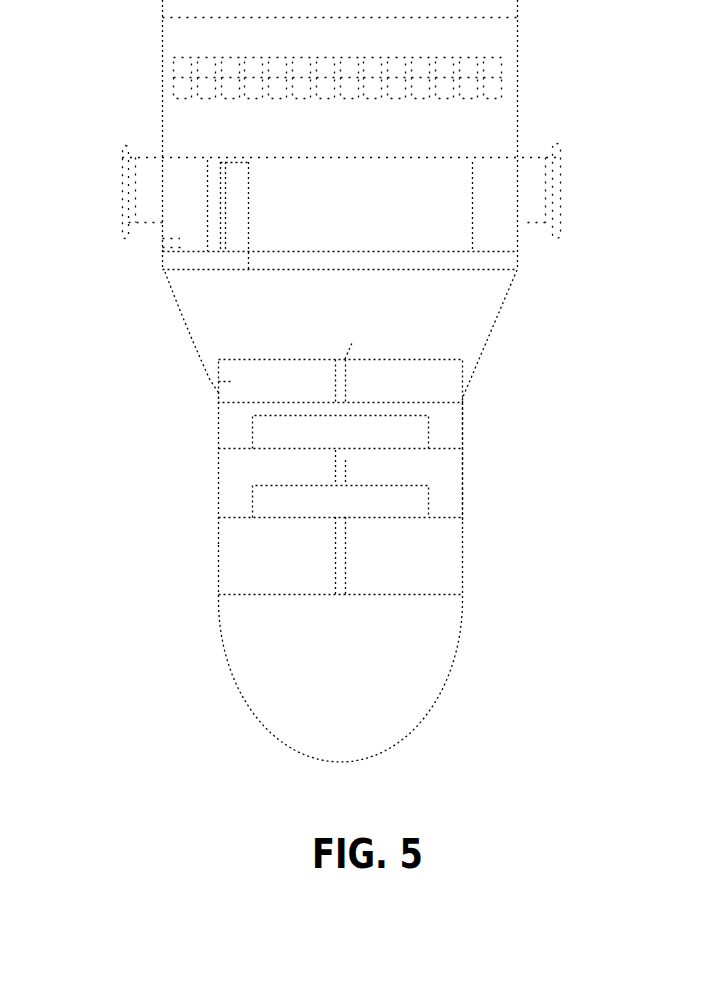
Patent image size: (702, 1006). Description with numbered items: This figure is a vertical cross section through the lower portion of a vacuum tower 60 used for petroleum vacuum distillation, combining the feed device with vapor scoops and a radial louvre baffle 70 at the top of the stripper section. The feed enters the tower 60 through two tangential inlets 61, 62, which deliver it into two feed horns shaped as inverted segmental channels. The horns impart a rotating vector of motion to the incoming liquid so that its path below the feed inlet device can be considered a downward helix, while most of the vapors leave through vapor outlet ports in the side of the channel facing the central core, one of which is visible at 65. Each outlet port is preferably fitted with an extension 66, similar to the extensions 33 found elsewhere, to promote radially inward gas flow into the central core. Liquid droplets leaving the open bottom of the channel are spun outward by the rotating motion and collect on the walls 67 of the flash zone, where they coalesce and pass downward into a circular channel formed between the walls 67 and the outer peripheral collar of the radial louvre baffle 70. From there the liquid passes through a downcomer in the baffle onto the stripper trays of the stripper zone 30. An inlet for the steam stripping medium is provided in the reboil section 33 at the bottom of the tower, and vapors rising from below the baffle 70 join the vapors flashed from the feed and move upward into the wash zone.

The stripper zone 30 is at (232, 492).
The reboil section 33 is at (243, 633).
The vacuum tower 60 is at (530, 352).
The tangential inlet 61 is at (120, 190).
The tangential inlet 62 is at (560, 190).
The vapor outlet port 65 is at (238, 163).
The extension 66 is at (230, 220).
The walls of the flash zone 67 is at (182, 310).
The radial louvre baffle 70 is at (215, 383).